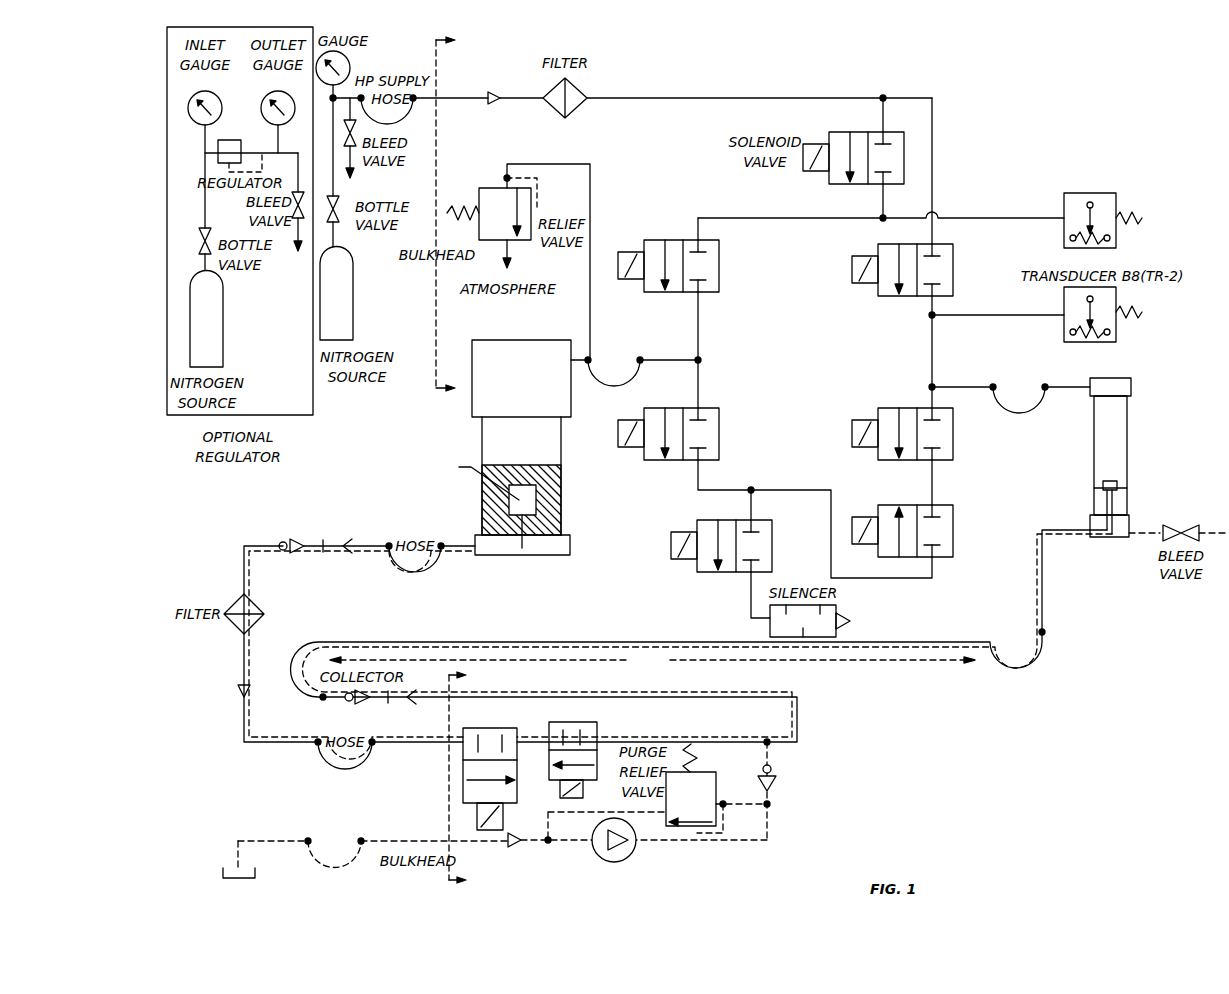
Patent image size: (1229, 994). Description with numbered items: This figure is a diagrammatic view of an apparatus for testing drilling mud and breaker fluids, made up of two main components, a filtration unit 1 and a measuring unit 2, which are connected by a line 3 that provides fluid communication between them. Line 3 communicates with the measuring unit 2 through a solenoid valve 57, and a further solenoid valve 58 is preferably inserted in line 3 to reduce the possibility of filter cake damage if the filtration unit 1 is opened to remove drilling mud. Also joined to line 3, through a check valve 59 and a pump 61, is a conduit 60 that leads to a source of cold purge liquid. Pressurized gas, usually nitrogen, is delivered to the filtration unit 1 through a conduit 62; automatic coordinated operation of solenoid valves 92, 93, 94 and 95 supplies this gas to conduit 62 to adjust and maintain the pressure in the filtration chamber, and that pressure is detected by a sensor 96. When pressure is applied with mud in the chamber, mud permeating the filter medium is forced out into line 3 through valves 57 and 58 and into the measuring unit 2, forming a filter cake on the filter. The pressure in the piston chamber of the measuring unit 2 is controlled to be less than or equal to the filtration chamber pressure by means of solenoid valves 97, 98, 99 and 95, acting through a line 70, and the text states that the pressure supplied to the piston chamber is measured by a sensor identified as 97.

The filtration unit 1 is at (490, 515).
The measuring unit 2 is at (1127, 447).
The line 3 is at (495, 644).
The solenoid valve 57 is at (490, 830).
The solenoid valve 58 is at (598, 730).
The check valve 59 is at (772, 793).
The conduit 60 is at (396, 845).
The pump 61 is at (636, 843).
The conduit 62 is at (629, 386).
The line 70 is at (1072, 390).
The solenoid valve 92 is at (829, 184).
The solenoid valve 93 is at (720, 258).
The solenoid valve 94 is at (720, 426).
The solenoid valve 95 is at (672, 540).
The sensor 96 is at (1116, 230).
The solenoid valve 97 is at (953, 270).
The solenoid valve 98 is at (953, 432).
The solenoid valve 99 is at (953, 530).